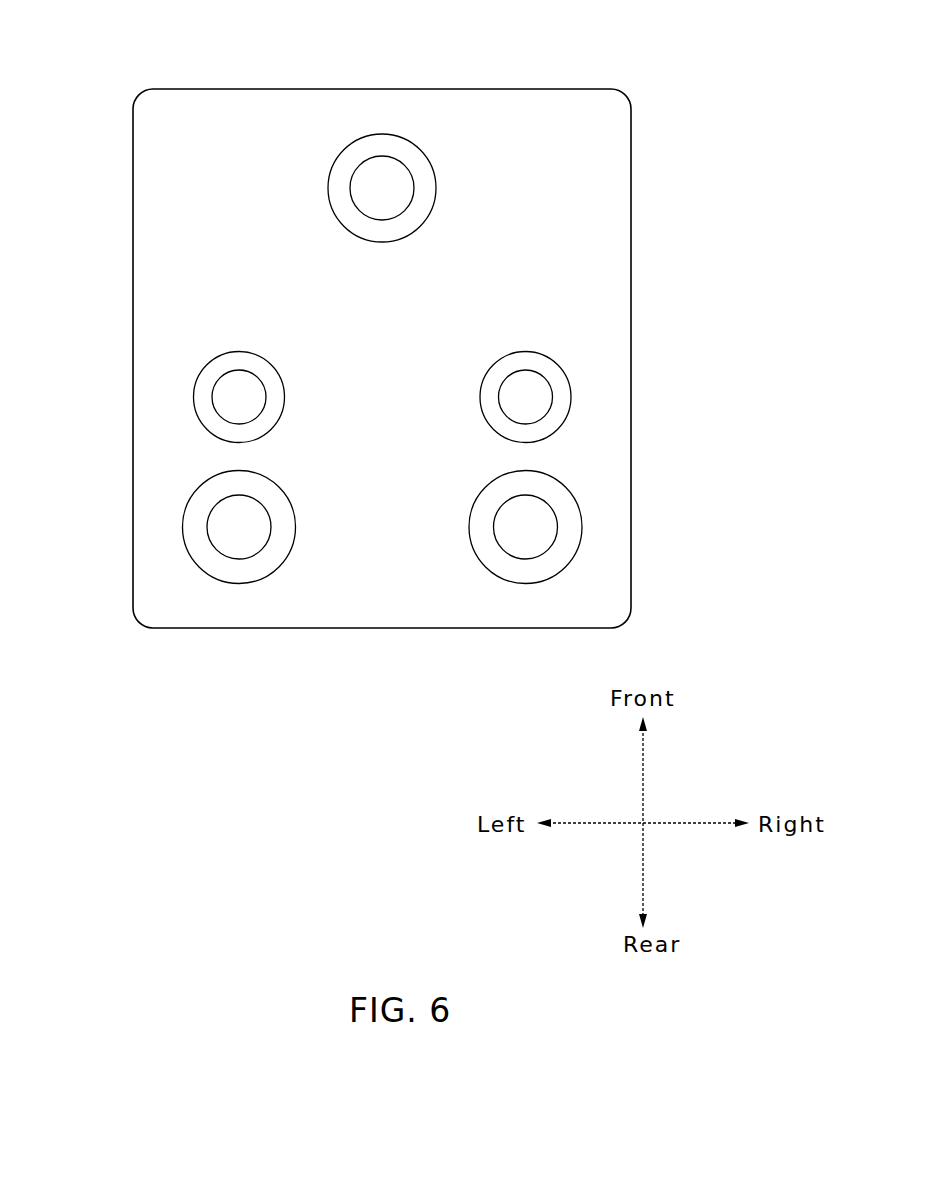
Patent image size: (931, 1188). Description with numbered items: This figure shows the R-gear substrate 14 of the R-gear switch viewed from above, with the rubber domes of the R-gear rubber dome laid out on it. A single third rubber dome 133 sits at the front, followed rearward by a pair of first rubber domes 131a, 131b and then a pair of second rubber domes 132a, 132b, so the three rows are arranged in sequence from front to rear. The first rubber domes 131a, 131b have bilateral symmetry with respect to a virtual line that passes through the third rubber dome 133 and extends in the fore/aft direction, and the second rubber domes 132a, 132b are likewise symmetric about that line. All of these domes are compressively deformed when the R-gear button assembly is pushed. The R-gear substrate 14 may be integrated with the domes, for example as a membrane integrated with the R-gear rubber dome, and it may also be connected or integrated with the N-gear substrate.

The R-gear substrate 14 is at (395, 613).
The third rubber dome 133 is at (381, 175).
The first rubber dome 131a is at (224, 395).
The first rubber dome 131b is at (540, 395).
The second rubber dome 132a is at (220, 525).
The second rubber dome 132b is at (546, 525).